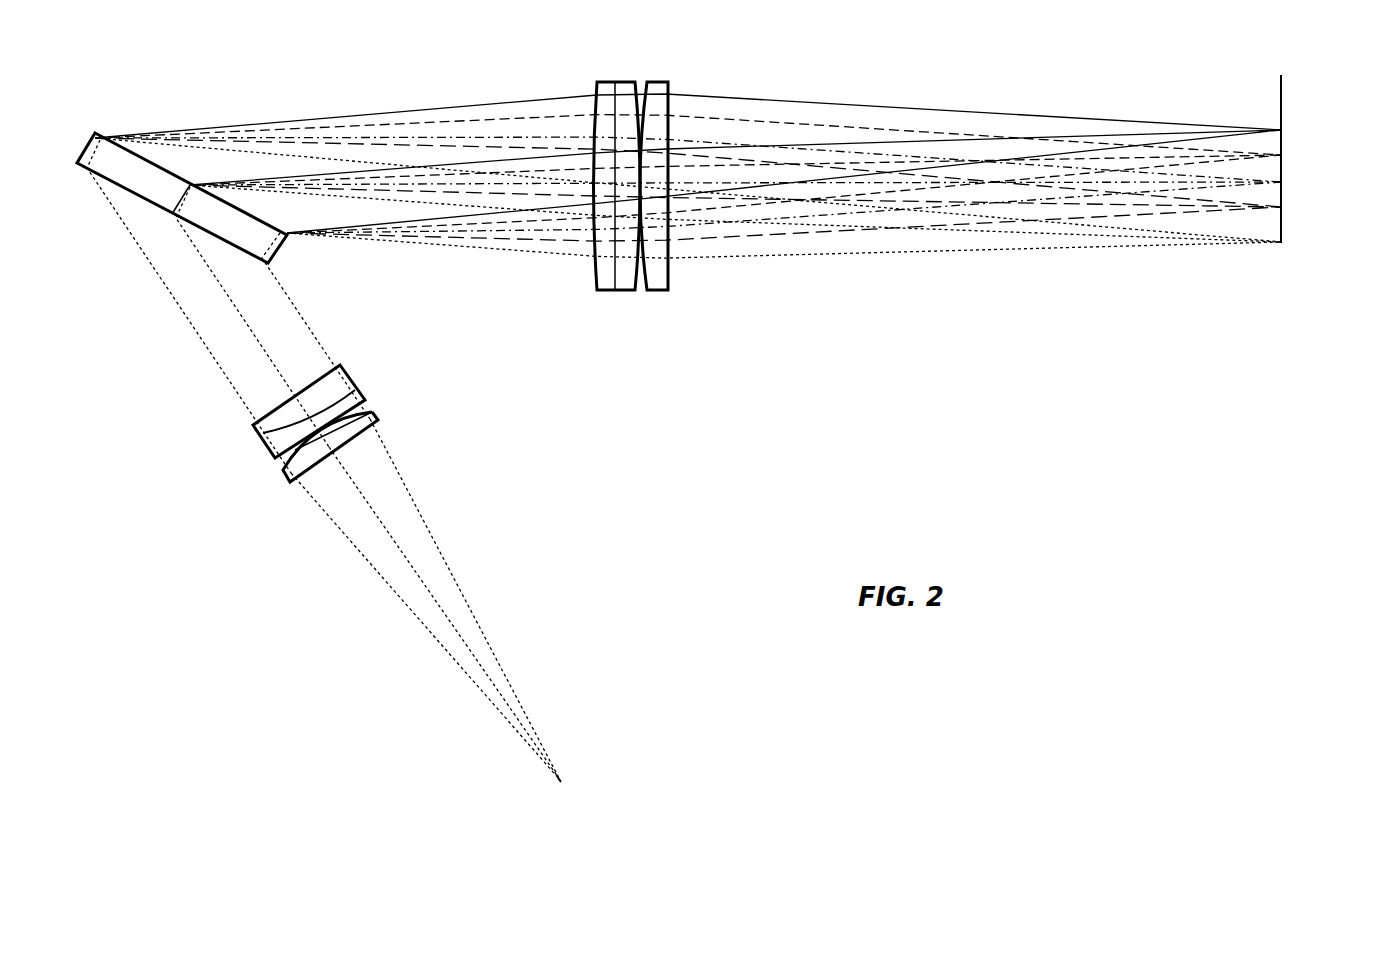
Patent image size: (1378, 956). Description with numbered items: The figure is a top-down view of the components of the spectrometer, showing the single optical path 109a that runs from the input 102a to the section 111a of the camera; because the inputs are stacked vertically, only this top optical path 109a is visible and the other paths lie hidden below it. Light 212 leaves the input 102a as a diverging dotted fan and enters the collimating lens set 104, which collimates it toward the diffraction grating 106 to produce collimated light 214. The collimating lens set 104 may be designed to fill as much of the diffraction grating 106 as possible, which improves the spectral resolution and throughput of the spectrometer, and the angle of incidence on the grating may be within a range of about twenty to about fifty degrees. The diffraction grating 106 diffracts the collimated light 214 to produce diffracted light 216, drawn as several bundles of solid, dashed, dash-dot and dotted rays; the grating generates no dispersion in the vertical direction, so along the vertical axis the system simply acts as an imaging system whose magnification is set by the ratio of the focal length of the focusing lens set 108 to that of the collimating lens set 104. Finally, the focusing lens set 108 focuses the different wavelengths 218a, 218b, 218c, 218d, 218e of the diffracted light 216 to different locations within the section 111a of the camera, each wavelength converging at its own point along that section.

The input 102a is at (565, 779).
The collimating lens set 104 is at (367, 407).
The diffraction grating 106 is at (270, 256).
The focusing lens set 108 is at (663, 290).
The optical path 109a is at (684, 421).
The section of the camera 111a is at (1282, 236).
The light 212 is at (497, 712).
The collimated light 214 is at (228, 377).
The diffracted light 216 is at (323, 223).
The wavelength 218a is at (1281, 132).
The wavelength 218b is at (1281, 157).
The wavelength 218c is at (1281, 184).
The wavelength 218d is at (1281, 209).
The wavelength 218e is at (1261, 243).